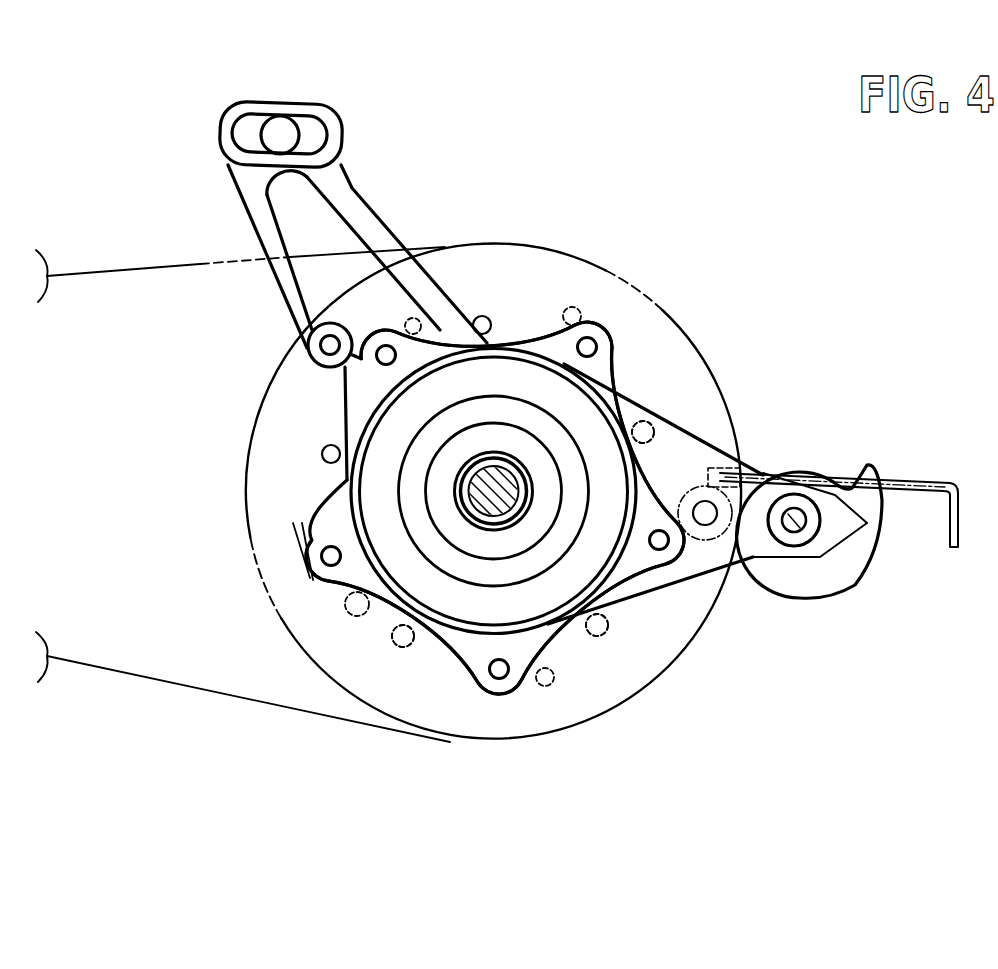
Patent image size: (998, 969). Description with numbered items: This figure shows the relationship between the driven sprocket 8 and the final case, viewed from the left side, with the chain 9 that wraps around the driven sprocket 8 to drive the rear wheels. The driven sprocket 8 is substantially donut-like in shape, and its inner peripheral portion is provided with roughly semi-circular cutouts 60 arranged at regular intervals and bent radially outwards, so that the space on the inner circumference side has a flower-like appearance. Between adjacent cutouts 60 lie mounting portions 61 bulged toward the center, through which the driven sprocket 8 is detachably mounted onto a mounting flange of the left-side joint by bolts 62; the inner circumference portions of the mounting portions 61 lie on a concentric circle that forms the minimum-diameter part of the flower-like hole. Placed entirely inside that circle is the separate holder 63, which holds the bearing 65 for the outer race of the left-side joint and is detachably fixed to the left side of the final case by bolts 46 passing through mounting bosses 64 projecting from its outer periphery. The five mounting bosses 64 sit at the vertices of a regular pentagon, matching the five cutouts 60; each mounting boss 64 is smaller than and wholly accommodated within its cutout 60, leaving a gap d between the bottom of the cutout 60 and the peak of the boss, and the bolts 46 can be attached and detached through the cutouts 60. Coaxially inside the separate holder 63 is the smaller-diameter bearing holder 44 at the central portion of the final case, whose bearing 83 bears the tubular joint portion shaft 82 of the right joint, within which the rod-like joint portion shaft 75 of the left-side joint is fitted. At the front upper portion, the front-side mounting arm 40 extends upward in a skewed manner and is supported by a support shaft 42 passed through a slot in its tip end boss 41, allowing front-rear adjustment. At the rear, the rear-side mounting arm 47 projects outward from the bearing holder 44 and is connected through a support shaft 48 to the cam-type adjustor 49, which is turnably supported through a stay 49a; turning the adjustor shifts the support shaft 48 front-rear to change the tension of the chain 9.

The driven sprocket 8 is at (283, 593).
The chain 9 is at (122, 268).
The front-side mounting arm 40 is at (348, 187).
The tip end boss 41 is at (232, 111).
The support shaft 42 is at (282, 128).
The bearing holder 44 is at (627, 575).
The bolts 46 is at (385, 345).
The rear-side mounting arm 47 is at (750, 560).
The support shaft 48 is at (803, 537).
The cam-type adjustor 49 is at (863, 557).
The stay 49a is at (923, 480).
The cutouts 60 is at (415, 318).
The mounting portion 61 is at (515, 300).
The bolts 62 is at (483, 312).
The separate holder 63 is at (373, 428).
The mounting bosses 64 is at (445, 248).
The bearing 65 is at (418, 418).
The joint portion shaft 75 is at (532, 501).
The joint portion shaft 82 is at (482, 456).
The bearing 83 is at (447, 478).
The gap d is at (342, 537).